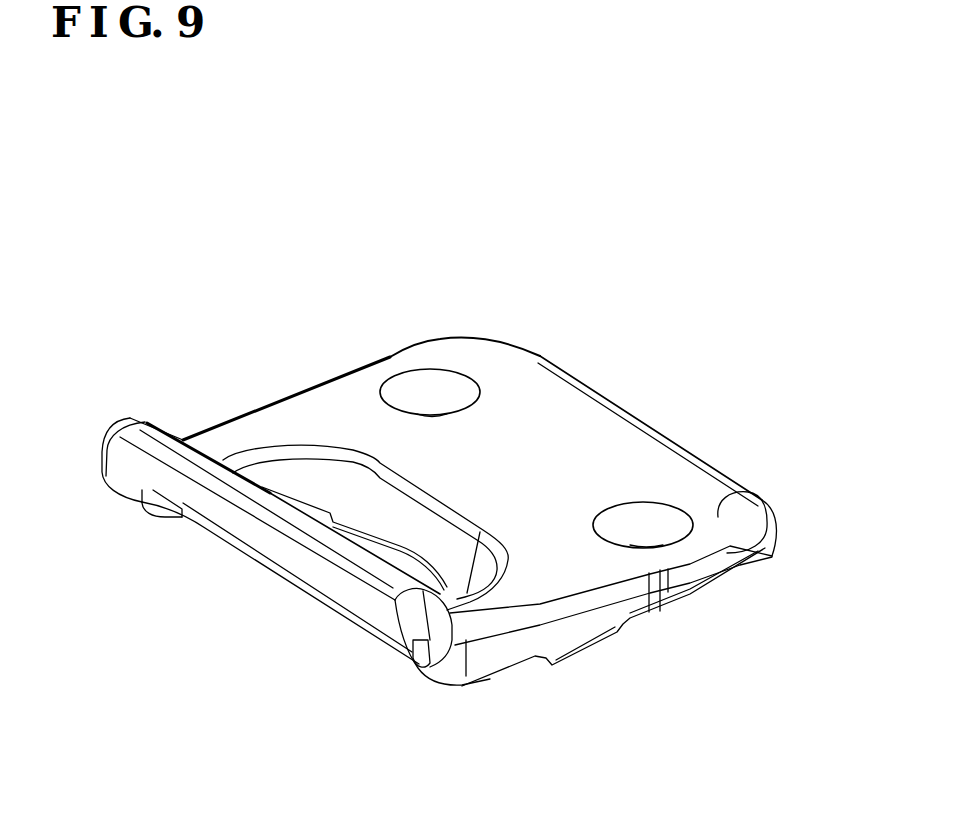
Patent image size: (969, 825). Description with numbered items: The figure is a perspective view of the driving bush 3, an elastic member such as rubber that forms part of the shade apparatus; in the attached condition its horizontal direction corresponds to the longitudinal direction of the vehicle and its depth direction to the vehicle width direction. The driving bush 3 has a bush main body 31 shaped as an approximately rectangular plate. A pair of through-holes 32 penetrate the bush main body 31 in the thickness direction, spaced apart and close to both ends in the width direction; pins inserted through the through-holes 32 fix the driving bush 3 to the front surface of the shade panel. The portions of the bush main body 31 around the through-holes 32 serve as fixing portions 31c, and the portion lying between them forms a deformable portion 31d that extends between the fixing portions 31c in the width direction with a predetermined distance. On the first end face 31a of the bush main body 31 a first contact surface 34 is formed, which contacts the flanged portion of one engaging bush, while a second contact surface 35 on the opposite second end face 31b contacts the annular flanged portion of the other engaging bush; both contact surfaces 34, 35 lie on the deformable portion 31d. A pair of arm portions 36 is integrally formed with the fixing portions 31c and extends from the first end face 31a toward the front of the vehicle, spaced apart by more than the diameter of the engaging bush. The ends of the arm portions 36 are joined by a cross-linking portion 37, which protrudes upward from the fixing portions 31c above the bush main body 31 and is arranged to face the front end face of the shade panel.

The driving bush 3 is at (519, 266).
The bush main body 31 is at (616, 393).
The first end face 31a is at (423, 538).
The second end face 31b is at (710, 458).
The fixing portion 31c is at (468, 358).
The deformable portion 31d is at (545, 460).
The through-hole 32 is at (427, 392).
The first contact surface 34 is at (380, 500).
The second contact surface 35 is at (645, 411).
The arm portion 36 is at (217, 440).
The cross-linking portion 37 is at (237, 490).